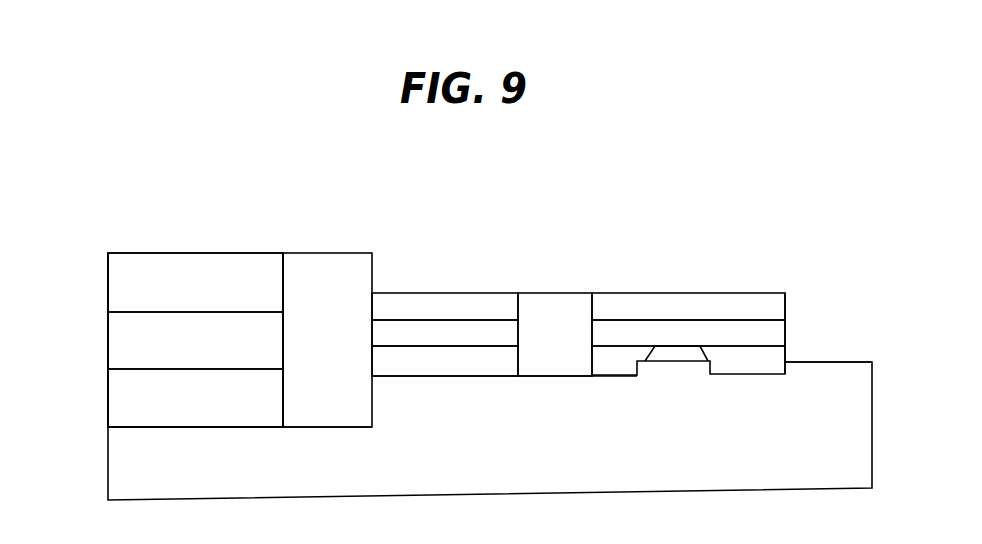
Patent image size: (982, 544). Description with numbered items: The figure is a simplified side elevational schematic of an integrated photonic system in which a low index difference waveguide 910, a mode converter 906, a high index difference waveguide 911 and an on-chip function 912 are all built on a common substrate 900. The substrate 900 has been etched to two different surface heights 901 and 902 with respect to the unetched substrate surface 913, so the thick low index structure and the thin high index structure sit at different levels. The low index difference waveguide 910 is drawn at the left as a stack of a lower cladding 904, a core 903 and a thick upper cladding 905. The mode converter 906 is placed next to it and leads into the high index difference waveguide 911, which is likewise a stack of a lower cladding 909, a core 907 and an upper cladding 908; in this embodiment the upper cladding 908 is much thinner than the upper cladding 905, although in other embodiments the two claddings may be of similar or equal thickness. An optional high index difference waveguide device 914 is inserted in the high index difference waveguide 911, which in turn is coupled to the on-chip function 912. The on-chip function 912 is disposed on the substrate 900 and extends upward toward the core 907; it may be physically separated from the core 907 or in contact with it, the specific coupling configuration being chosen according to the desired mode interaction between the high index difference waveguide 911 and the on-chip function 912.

The substrate 900 is at (543, 479).
The surface height 901 is at (206, 434).
The surface height 902 is at (492, 385).
The core 903 is at (170, 354).
The lower cladding 904 is at (170, 412).
The upper cladding 905 is at (170, 296).
The mode converter 906 is at (300, 352).
The core 907 is at (414, 342).
The upper cladding 908 is at (414, 315).
The lower cladding 909 is at (414, 371).
The low index difference waveguide 910 is at (98, 255).
The high index difference waveguide 911 is at (795, 286).
The on-chip function 912 is at (672, 367).
The unetched substrate surface 913 is at (836, 371).
The high index difference waveguide device 914 is at (530, 349).